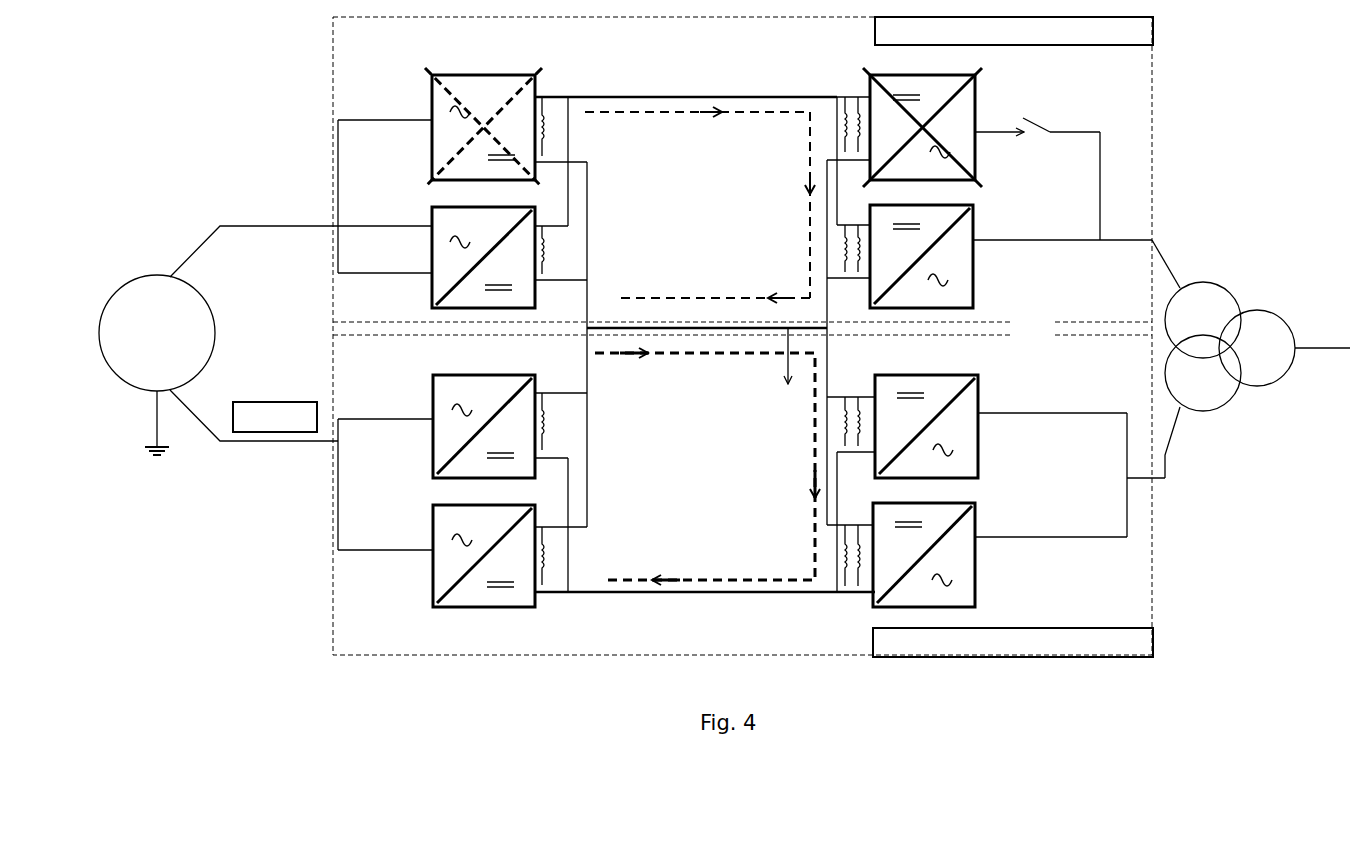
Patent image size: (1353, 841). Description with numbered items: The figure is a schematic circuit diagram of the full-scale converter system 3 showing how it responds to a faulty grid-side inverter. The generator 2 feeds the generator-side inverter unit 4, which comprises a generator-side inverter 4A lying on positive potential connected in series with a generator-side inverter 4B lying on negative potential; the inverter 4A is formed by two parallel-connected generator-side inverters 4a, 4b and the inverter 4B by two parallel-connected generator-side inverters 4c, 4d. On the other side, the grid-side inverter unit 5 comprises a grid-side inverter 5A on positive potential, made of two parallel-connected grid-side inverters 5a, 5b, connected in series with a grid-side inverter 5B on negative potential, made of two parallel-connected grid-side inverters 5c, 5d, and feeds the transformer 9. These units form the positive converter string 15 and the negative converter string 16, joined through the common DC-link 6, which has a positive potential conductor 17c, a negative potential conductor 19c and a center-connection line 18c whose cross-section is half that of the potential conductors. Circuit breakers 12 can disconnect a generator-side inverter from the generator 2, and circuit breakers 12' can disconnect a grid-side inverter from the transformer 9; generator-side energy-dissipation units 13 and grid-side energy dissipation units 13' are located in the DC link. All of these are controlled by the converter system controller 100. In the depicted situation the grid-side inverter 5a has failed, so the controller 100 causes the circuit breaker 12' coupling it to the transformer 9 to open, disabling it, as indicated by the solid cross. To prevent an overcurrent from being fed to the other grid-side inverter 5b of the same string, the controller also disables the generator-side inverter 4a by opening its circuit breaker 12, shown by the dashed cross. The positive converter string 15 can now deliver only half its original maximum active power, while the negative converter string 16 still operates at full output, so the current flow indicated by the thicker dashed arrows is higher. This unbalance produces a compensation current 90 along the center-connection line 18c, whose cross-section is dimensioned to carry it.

The generator 2 is at (150, 276).
The converter system 3 is at (273, 108).
The generator-side inverter unit 4 is at (418, 312).
The generator-side inverter lying on positive potential 4A is at (372, 198).
The generator-side inverter lying on negative potential 4B is at (375, 523).
The generator-side inverter 4a is at (432, 152).
The generator-side inverter 4b is at (432, 276).
The generator-side inverter 4c is at (433, 453).
The generator-side inverter 4d is at (433, 580).
The grid-side inverter unit 5 is at (988, 306).
The grid-side inverter lying on positive potential 5A is at (1080, 194).
The grid-side inverter lying on negative potential 5B is at (1086, 512).
The grid-side inverter 5a is at (975, 160).
The grid-side inverter 5b is at (973, 280).
The grid-side inverter 5c is at (978, 456).
The grid-side inverter 5d is at (975, 571).
The common DC-link 6 is at (645, 607).
The transformer 9 is at (1240, 292).
The circuit breakers 12 is at (385, 244).
The circuit breakers 12' is at (1062, 416).
The generator-side energy-dissipation units 13 is at (566, 311).
The grid-side energy dissipation units 13' is at (816, 309).
The positive converter string 15 is at (1150, 100).
The negative converter string 16 is at (1150, 548).
The positive potential conductor 17c is at (666, 96).
The center-connection line 18c is at (688, 327).
The negative potential conductor 19c is at (754, 598).
The compensation current 90 is at (760, 340).
The converter system controller 100 is at (288, 400).